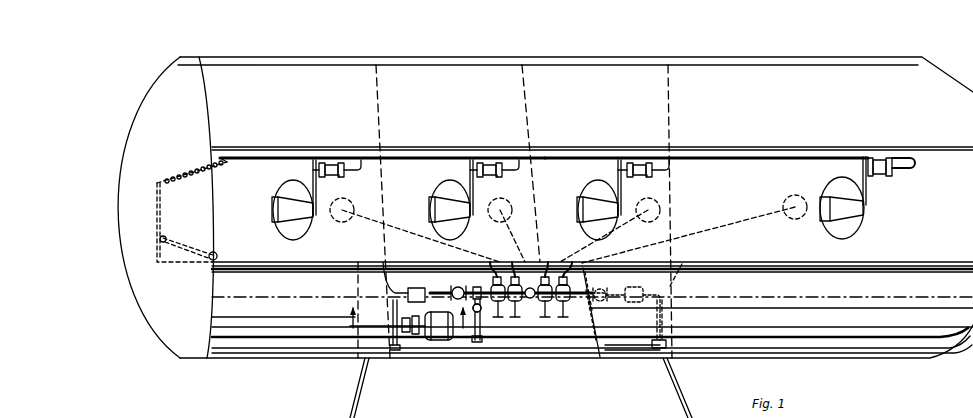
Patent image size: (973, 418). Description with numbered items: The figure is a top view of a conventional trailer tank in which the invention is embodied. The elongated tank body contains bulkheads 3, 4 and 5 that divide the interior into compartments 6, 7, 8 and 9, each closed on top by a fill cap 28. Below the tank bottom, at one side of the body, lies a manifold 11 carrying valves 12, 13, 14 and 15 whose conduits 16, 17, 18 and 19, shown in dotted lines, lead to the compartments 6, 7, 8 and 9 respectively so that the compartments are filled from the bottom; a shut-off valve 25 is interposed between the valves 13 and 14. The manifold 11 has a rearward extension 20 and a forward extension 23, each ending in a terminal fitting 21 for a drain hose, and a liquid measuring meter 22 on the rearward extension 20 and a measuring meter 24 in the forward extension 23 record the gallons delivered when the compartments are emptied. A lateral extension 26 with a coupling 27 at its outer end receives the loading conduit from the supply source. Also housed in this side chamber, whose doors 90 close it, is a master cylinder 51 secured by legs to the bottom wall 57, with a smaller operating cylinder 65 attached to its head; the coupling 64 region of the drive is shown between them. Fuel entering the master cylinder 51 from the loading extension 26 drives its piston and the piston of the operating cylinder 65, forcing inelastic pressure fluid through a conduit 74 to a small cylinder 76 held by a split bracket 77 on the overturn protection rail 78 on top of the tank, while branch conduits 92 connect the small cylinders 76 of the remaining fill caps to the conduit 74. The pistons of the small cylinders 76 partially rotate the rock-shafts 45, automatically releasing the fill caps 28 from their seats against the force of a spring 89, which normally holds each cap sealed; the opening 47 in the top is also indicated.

The bulkhead 3 is at (388, 104).
The bulkhead 4 is at (534, 110).
The bulkhead 5 is at (683, 113).
The compartment 6 is at (291, 101).
The compartment 7 is at (447, 108).
The compartment 8 is at (597, 108).
The compartment 9 is at (828, 113).
The manifold 11 is at (586, 302).
The valve 12 is at (498, 318).
The valve 13 is at (515, 318).
The valve 14 is at (545, 318).
The valve 15 is at (563, 318).
The conduit 16 is at (489, 266).
The conduit 17 is at (511, 266).
The conduit 18 is at (548, 262).
The conduit 19 is at (567, 264).
The rearward extension 20 is at (417, 288).
The terminal fitting 21 is at (392, 352).
The liquid measuring meter 22 is at (395, 290).
The forward extension 23 is at (674, 286).
The measuring meter 24 is at (637, 288).
The shut-off valve 25 is at (530, 300).
The lateral extension 26 is at (482, 343).
The coupling 27 is at (475, 312).
The fill cap 28 is at (287, 194).
The rock-shaft 45 is at (312, 186).
The outlet opening 47 is at (768, 196).
The master cylinder 51 is at (434, 342).
The bottom wall 57 is at (576, 358).
The coupling 64 is at (440, 328).
The operating cylinder 65 is at (410, 334).
The conduit 74 is at (254, 155).
The small cylinder 76 is at (341, 178).
The split bracket 77 is at (329, 178).
The overturn protection rail 78 is at (780, 155).
The spring 89 is at (333, 163).
The door 90 is at (344, 414).
The branch conduit 92 is at (361, 170).